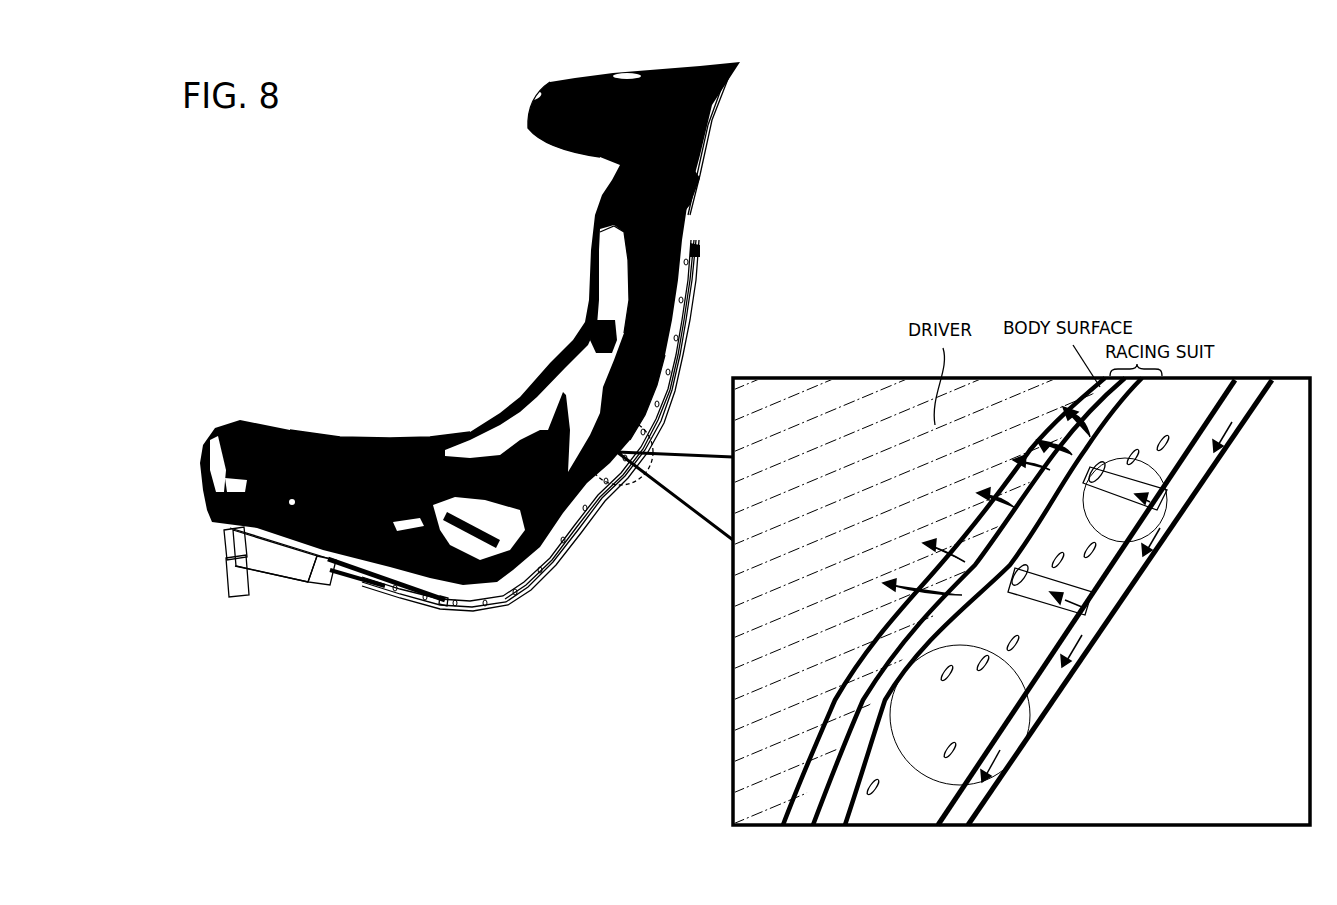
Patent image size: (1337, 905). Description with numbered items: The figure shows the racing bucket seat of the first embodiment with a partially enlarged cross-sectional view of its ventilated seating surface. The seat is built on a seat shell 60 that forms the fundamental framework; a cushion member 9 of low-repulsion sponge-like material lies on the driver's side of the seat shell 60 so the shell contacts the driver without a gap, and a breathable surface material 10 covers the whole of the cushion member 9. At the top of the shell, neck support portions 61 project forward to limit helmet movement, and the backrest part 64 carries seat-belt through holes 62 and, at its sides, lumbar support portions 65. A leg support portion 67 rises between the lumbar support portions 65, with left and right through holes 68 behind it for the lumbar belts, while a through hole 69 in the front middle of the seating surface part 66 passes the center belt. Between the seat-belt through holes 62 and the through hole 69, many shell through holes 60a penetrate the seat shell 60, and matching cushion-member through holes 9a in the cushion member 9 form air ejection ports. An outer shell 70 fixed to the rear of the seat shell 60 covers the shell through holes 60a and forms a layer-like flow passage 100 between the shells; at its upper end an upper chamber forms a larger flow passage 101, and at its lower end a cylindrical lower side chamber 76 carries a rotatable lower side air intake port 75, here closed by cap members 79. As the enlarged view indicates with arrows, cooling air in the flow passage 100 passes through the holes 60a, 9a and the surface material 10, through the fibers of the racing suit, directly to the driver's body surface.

The cushion member 9 is at (457, 593).
The cushion-member through holes 9a is at (1197, 480).
The surface material 10 is at (500, 593).
The seat shell 60 is at (687, 263).
The shell through holes 60a is at (1182, 545).
The neck support portions 61 is at (547, 141).
The seat-belt through holes 62 is at (697, 183).
The backrest part 64 is at (643, 393).
The lumbar support portions 65 is at (612, 252).
The seating surface part 66 is at (383, 593).
The leg support portion 67 is at (337, 430).
The through holes 68 is at (440, 437).
The through hole 69 is at (343, 575).
The outer shell 70 is at (690, 340).
The lower side air intake port 75 is at (260, 593).
The lower side chamber 76 is at (307, 580).
The cap members 79 is at (228, 580).
The layer-like flow passage 100 is at (600, 497).
The flow passage 101 is at (690, 297).